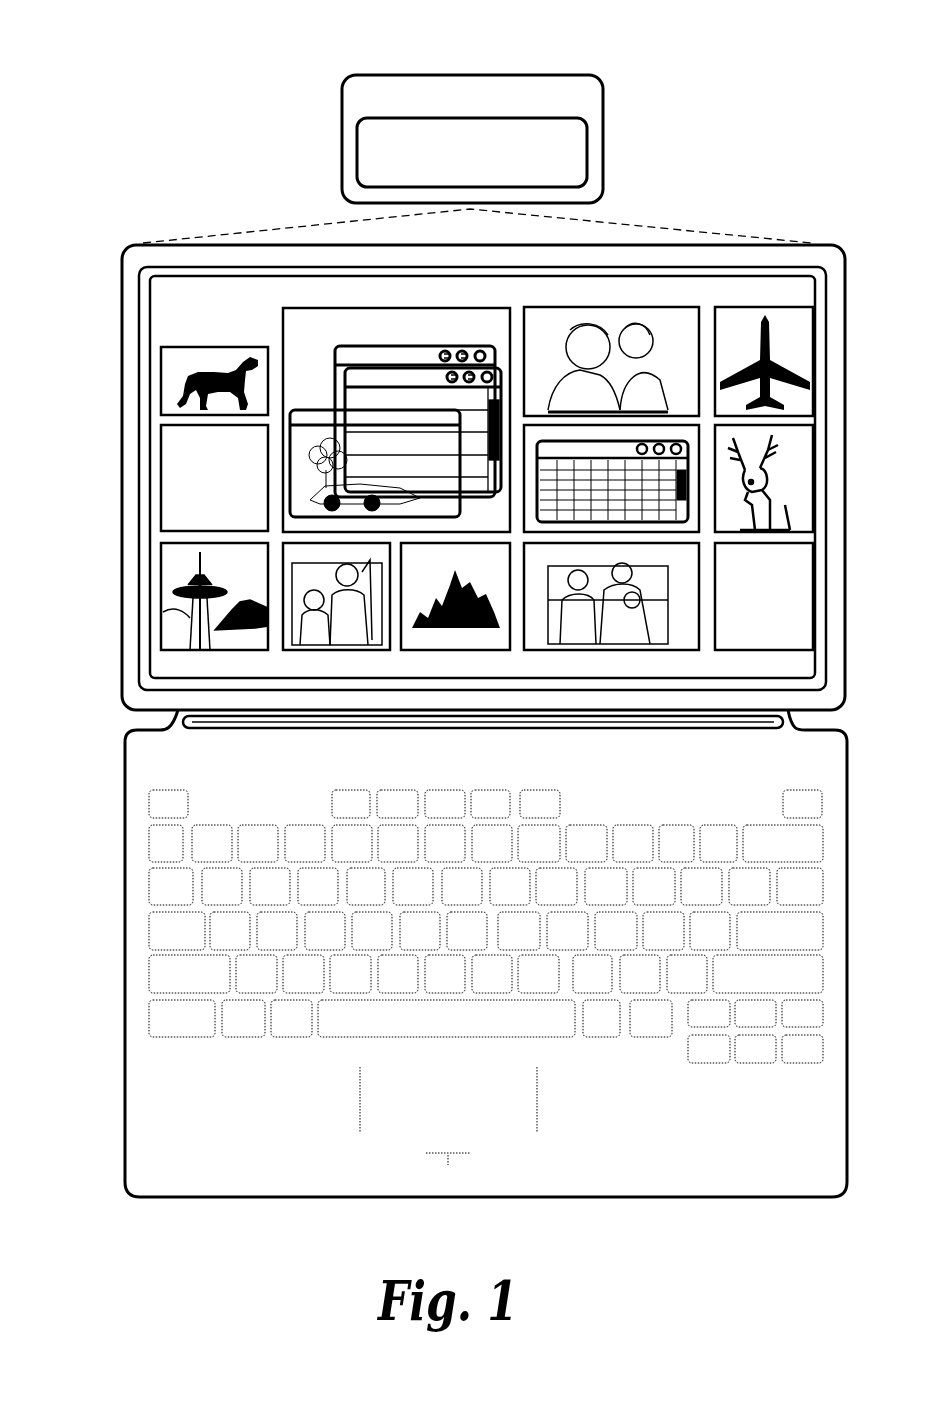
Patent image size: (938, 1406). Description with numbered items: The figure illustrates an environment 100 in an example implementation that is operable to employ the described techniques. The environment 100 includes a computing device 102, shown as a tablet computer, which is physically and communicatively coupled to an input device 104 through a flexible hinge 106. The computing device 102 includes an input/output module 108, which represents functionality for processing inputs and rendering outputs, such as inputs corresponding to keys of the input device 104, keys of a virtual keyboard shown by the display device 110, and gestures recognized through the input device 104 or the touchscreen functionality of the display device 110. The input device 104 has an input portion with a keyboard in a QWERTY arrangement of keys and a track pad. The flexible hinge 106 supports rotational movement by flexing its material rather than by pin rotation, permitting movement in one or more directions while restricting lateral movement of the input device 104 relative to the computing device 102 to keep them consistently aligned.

The environment 100 is at (117, 64).
The computing device 102 is at (472, 139).
The input device 104 is at (125, 985).
The flexible hinge 106 is at (116, 722).
The input/output module 108 is at (472, 152).
The display device 110 is at (150, 478).